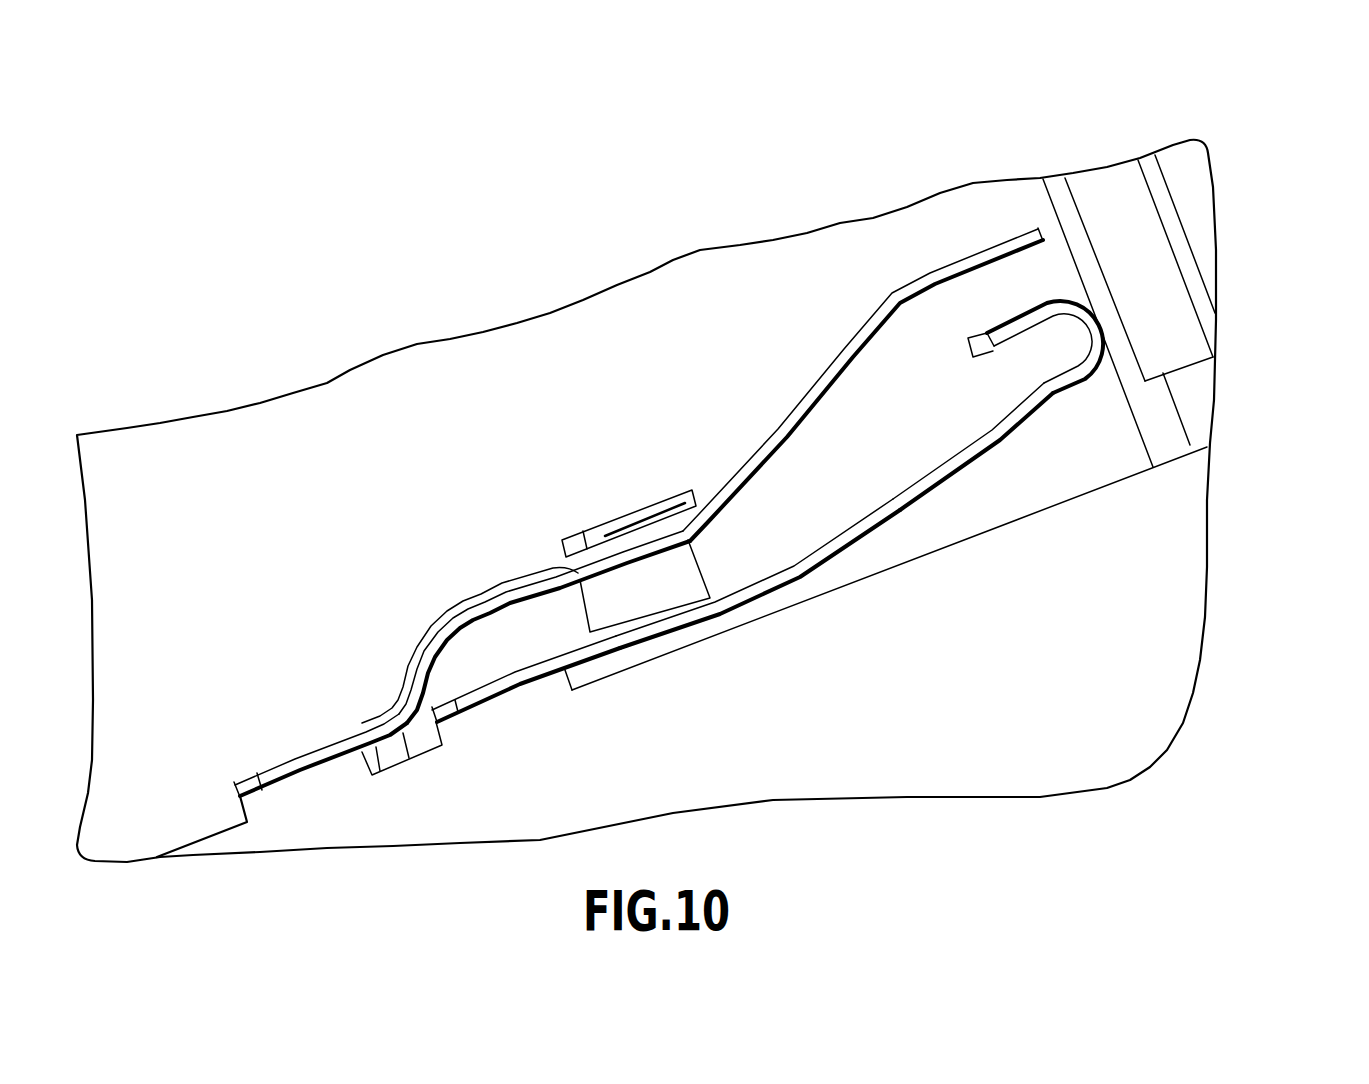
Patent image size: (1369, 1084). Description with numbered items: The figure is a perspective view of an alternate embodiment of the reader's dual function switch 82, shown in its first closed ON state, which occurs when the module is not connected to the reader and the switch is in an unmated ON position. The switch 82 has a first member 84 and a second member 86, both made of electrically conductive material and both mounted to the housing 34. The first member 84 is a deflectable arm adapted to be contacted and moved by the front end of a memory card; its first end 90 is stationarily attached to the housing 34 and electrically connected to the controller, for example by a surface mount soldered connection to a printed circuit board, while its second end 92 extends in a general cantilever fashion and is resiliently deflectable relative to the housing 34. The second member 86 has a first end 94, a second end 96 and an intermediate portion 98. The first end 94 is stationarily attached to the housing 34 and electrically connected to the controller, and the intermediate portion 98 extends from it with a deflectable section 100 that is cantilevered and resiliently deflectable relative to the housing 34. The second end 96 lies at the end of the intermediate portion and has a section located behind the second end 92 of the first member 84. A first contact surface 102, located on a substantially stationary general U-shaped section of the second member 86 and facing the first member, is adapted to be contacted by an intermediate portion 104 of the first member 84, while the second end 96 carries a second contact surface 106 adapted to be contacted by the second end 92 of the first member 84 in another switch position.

The dual function switch 82 is at (1247, 251).
The housing 34 is at (1183, 347).
The first member 84 is at (408, 752).
The second member 86 is at (833, 547).
The first end 90 is at (307, 773).
The second end 92 is at (980, 253).
The first end 94 is at (502, 697).
The second end 96 is at (1020, 322).
The intermediate portion 98 is at (997, 433).
The deflectable section 100 is at (943, 470).
The first contact surface 102 is at (625, 540).
The intermediate portion 104 is at (562, 578).
The second contact surface 106 is at (1084, 300).